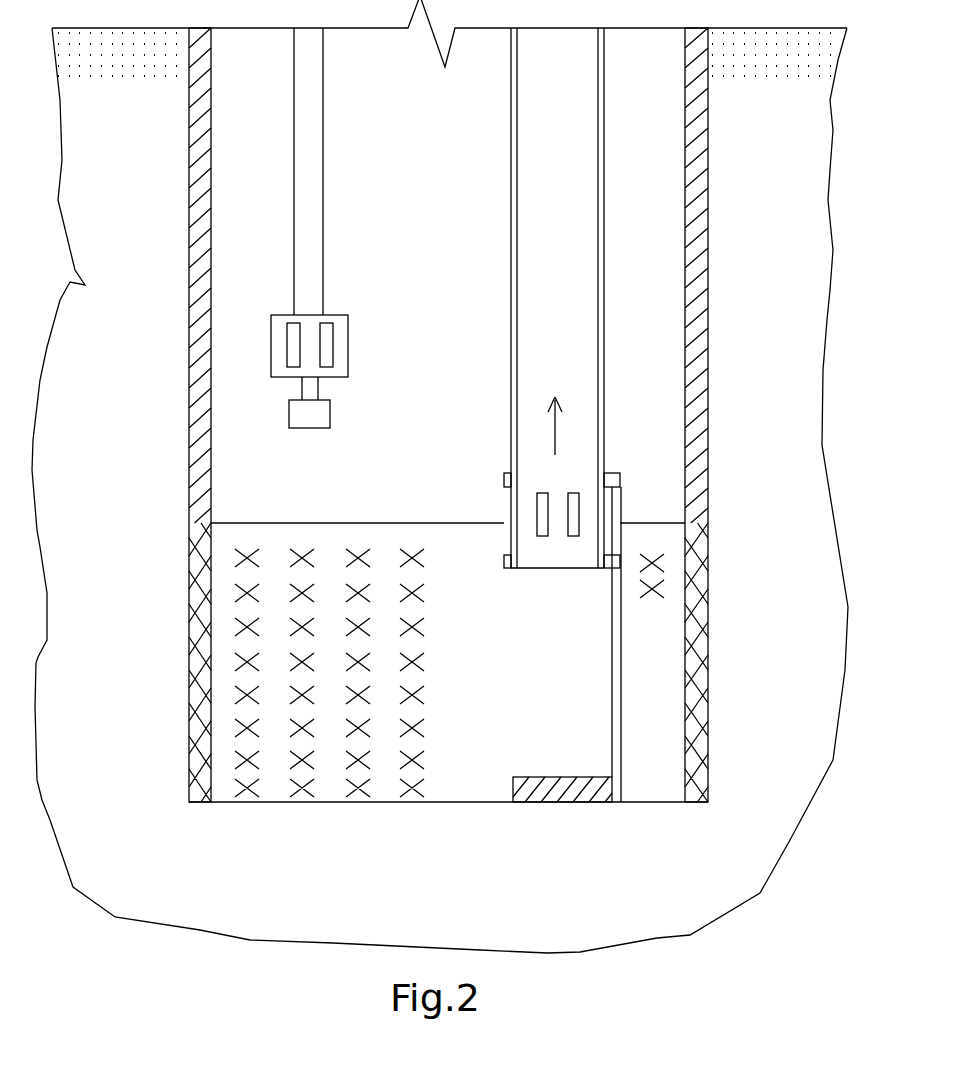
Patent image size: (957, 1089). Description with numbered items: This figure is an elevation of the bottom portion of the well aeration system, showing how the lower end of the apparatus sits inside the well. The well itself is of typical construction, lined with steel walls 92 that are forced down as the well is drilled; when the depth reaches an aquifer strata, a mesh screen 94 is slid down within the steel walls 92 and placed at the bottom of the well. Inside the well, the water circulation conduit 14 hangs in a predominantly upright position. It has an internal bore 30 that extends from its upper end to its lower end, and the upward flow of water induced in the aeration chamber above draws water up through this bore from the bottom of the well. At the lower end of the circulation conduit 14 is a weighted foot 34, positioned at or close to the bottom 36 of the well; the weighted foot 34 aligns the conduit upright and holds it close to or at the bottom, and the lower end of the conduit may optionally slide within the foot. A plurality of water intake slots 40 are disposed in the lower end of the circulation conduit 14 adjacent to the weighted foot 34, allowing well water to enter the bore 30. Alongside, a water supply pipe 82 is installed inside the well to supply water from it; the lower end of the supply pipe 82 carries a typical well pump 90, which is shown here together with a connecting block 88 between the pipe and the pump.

The water circulation conduit 14 is at (511, 283).
The internal bore 30 is at (555, 333).
The weighted foot 34 is at (580, 773).
The bottom of the well 36 is at (438, 802).
The water intake slots 40 is at (538, 518).
The water supply pipe 82 is at (323, 180).
The connector block 88 is at (323, 343).
The well pump 90 is at (308, 415).
The steel walls 92 is at (697, 455).
The mesh screen 94 is at (705, 633).